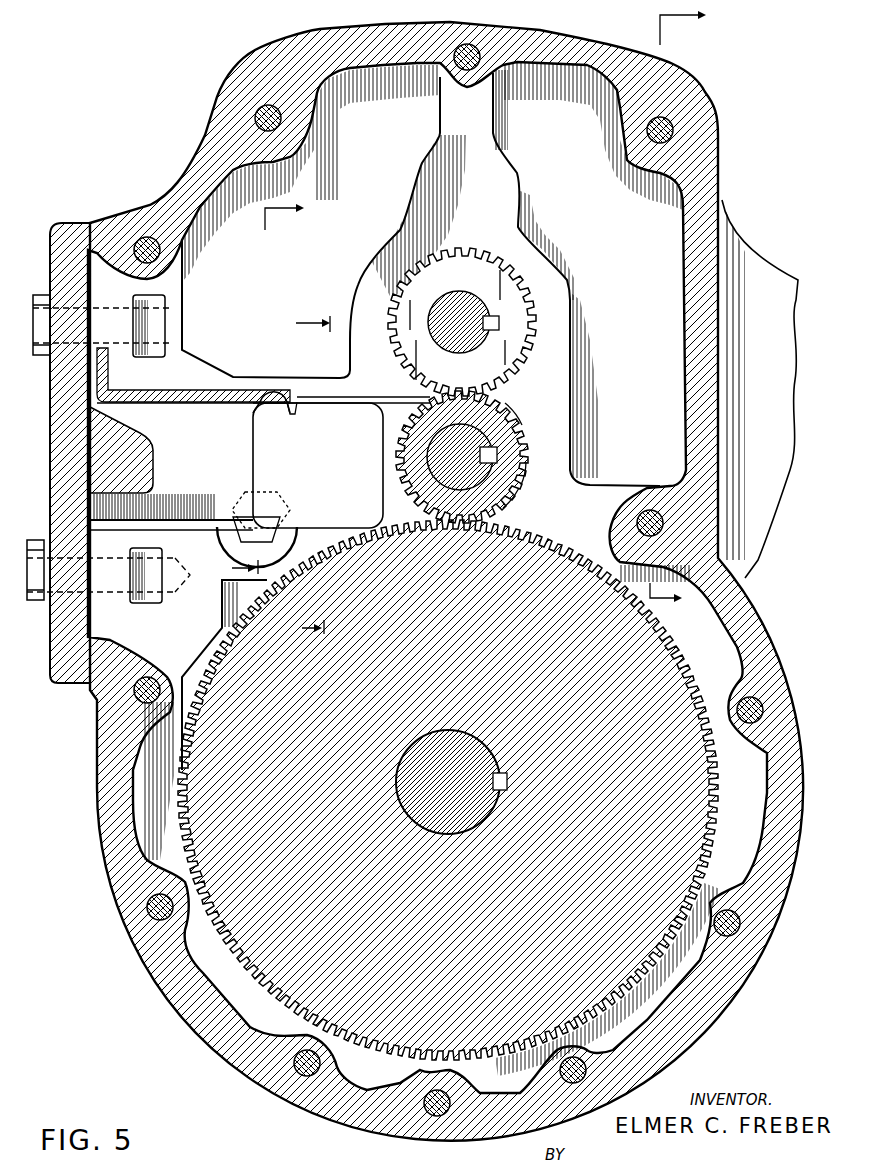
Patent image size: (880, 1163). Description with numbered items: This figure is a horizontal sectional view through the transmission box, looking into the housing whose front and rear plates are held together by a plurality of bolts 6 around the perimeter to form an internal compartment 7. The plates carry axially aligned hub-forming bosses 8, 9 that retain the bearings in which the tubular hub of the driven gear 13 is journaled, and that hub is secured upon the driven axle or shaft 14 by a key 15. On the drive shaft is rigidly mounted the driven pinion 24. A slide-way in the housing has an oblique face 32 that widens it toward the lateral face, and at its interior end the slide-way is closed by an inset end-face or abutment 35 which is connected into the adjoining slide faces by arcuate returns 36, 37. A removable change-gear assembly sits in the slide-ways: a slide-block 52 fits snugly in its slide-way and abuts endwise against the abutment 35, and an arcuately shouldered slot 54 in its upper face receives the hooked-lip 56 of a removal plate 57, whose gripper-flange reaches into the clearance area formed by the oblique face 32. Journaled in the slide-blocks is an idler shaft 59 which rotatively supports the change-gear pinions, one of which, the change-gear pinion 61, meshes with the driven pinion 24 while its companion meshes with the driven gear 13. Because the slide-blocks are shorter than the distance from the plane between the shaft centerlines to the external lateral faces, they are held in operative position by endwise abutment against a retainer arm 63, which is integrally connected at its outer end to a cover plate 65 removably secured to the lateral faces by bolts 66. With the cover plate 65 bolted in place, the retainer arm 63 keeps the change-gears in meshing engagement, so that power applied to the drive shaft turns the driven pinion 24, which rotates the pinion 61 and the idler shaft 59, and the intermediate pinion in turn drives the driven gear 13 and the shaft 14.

The bolts 6 is at (276, 111).
The internal compartment 7 is at (266, 391).
The hub-forming boss 8 is at (303, 477).
The hub-forming boss 9 is at (688, 310).
The driven gear 13 is at (257, 972).
The driven axle or shaft 14 is at (493, 742).
The key 15 is at (508, 785).
The driven pinion 24 is at (403, 291).
The oblique face 32 is at (140, 384).
The inset end-face or abutment 35 is at (520, 483).
The arcuate return 36 is at (510, 410).
The arcuate return 37 is at (517, 502).
The slide-block 52 is at (357, 403).
The arcuately shouldered slot 54 is at (297, 415).
The hooked-lip 56 is at (294, 397).
The removal plate 57 is at (177, 403).
The idler shaft 59 is at (423, 430).
The change-gear pinion 61 is at (400, 455).
The retainer arm 63 is at (252, 462).
The cover plate 65 is at (83, 222).
The bolts 66 is at (50, 298).